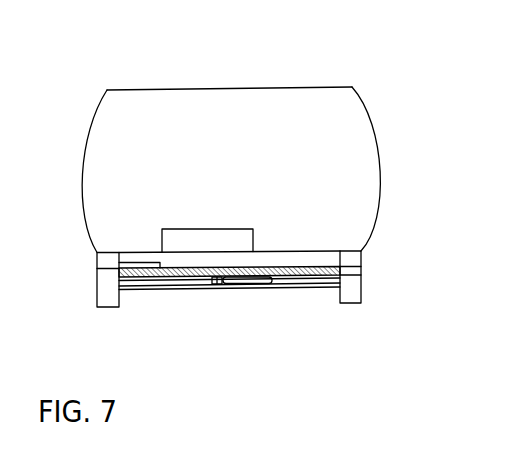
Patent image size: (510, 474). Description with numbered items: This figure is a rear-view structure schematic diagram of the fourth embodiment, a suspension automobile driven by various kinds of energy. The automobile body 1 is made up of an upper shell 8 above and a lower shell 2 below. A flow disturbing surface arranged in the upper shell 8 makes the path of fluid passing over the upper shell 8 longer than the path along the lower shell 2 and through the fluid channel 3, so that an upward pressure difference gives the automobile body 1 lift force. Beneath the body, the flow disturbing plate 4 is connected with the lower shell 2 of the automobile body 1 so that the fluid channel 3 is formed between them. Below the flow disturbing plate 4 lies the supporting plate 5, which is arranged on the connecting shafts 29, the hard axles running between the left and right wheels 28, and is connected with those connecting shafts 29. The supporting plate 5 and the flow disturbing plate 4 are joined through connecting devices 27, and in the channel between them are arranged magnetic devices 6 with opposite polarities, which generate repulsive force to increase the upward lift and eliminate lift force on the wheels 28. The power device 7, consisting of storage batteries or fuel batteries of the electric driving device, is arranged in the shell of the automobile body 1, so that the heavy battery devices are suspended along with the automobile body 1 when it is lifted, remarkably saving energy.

The automobile body 1 is at (346, 114).
The lower shell 2 is at (264, 254).
The fluid channel 3 is at (261, 278).
The flow disturbing plate 4 is at (297, 268).
The supporting plate 5 is at (289, 282).
The magnetic device 6 is at (217, 268).
The power device 7 is at (223, 240).
The upper shell 8 is at (177, 90).
The connecting device 27 is at (218, 285).
The wheel 28 is at (110, 288).
The connecting shaft 29 is at (183, 289).